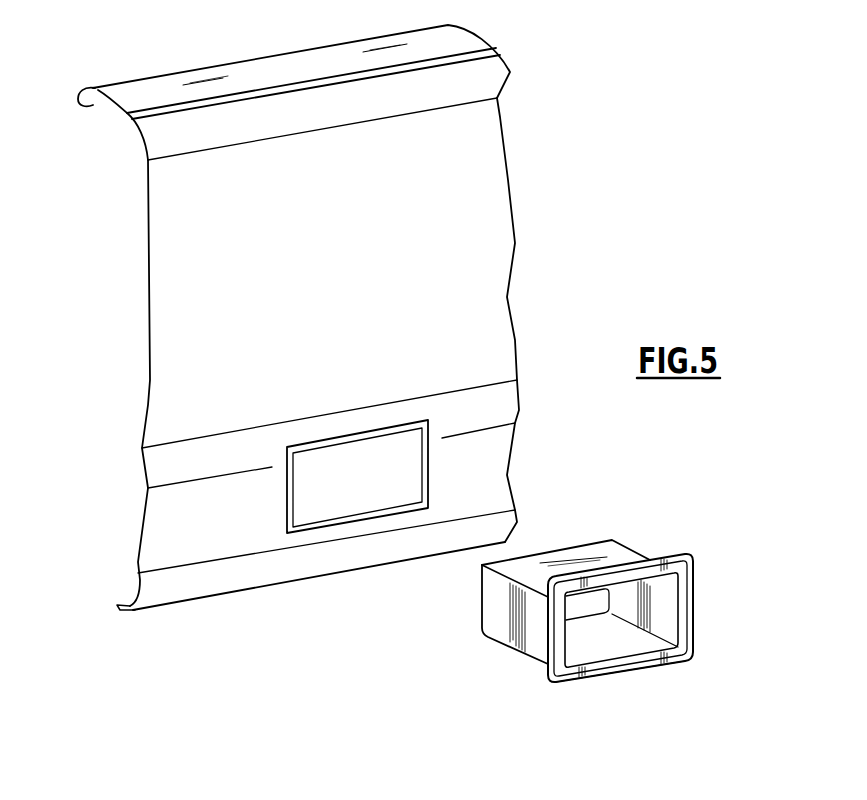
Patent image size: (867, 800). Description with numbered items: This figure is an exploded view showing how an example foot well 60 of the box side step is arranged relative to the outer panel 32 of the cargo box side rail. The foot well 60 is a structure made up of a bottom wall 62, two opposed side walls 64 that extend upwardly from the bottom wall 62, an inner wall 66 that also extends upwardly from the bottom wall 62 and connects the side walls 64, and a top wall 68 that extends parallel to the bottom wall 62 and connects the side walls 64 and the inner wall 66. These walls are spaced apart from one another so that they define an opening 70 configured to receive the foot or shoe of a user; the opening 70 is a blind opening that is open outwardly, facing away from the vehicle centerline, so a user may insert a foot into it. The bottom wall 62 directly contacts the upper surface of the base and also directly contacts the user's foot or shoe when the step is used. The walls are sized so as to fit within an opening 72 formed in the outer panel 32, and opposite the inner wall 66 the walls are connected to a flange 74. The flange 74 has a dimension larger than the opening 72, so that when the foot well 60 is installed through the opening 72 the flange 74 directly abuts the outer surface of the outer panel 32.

The outer panel 32 is at (492, 212).
The foot well 60 is at (701, 684).
The bottom wall 62 is at (607, 652).
The side walls 64 is at (502, 610).
The inner wall 66 is at (520, 557).
The top wall 68 is at (598, 556).
The opening 70 is at (610, 643).
The opening 72 is at (485, 563).
The flange 74 is at (572, 675).